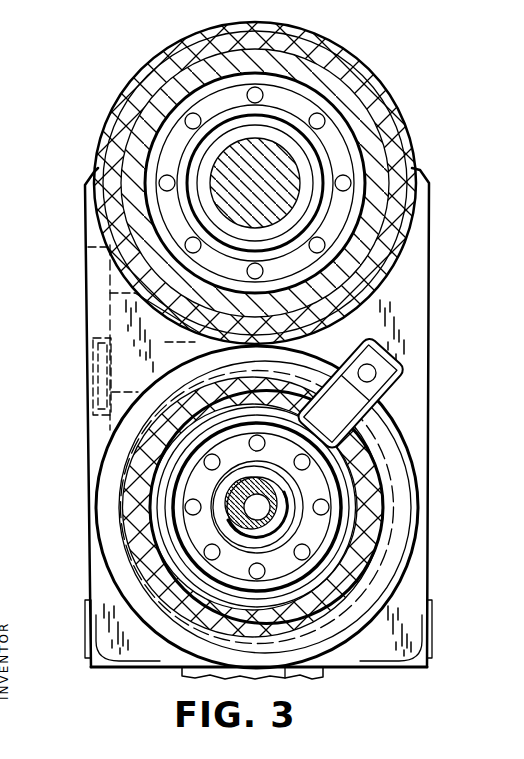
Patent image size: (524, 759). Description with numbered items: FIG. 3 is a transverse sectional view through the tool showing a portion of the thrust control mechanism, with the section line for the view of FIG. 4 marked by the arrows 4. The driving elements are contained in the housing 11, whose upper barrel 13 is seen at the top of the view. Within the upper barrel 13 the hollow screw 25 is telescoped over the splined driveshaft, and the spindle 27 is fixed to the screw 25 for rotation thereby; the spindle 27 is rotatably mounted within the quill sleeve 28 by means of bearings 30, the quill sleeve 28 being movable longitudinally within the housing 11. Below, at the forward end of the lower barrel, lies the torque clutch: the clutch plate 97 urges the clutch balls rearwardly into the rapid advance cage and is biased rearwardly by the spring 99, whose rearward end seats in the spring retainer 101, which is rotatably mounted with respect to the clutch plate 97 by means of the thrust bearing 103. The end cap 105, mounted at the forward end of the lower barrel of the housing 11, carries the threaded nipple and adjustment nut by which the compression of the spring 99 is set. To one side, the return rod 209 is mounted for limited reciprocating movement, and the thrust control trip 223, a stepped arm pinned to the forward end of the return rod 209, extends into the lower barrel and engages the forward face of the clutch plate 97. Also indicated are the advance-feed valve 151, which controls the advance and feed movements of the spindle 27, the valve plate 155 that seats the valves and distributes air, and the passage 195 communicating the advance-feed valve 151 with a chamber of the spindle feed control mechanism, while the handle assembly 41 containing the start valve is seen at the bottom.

The housing 11 is at (438, 209).
The upper barrel 13 is at (188, 57).
The hollow screw 25 is at (213, 150).
The spindle 27 is at (290, 168).
The quill sleeve 28 is at (357, 117).
The bearings 30 is at (302, 90).
The handle assembly 41 is at (325, 673).
The clutch plate 97 is at (355, 507).
The spring 99 is at (237, 520).
The spring retainer 101 is at (218, 490).
The thrust bearing 103 is at (327, 483).
The end cap 105 is at (372, 540).
The advance-feed valve 151 is at (192, 341).
The valve plate 155 is at (108, 288).
The passage 195 is at (95, 390).
The return rod 209 is at (376, 374).
The thrust control trip 223 is at (345, 408).
The section line 4- 4 is at (18, 358).